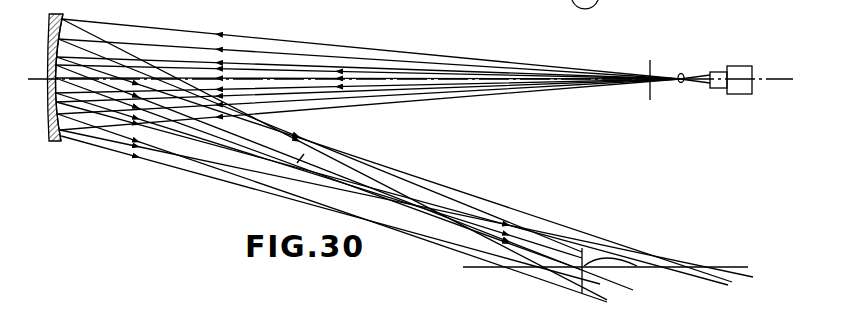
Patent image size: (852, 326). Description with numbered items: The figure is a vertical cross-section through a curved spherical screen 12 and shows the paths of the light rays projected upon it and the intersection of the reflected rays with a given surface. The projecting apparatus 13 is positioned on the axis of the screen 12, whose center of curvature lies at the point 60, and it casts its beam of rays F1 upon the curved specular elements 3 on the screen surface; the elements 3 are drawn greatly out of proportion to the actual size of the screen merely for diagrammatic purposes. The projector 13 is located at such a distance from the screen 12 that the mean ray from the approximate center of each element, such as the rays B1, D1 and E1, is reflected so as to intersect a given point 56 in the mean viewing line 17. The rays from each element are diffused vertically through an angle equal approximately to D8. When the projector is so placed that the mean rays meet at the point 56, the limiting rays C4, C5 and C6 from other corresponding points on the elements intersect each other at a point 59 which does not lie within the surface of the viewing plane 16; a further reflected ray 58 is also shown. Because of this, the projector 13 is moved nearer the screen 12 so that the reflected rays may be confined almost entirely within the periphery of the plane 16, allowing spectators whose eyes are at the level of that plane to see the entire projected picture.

The curved spherical screen 12 is at (48, 22).
The elements 3 is at (63, 22).
The projecting apparatus 13 is at (735, 67).
The center of curvature 60 is at (651, 70).
The beam of rays F1 is at (682, 84).
The vertical angle of diffusion D8 is at (319, 144).
The mean ray E1 is at (470, 223).
The mean ray B1 is at (507, 241).
The mean ray D1 is at (533, 252).
The marginal ray 58 is at (641, 253).
The intersection point of limiting rays 59 is at (586, 295).
The mean viewing line 17 is at (578, 288).
The viewing plane 16 is at (465, 270).
The given point in the mean viewing line 56 is at (637, 266).
The limiting ray C4 is at (393, 227).
The limiting ray C5 is at (418, 237).
The limiting ray C6 is at (445, 216).